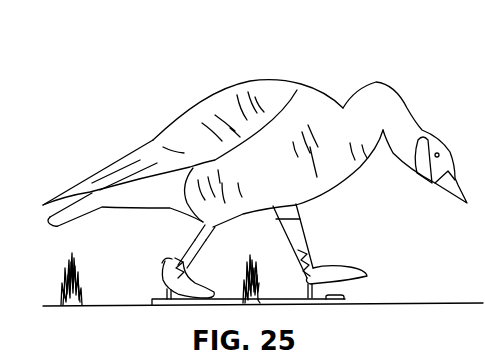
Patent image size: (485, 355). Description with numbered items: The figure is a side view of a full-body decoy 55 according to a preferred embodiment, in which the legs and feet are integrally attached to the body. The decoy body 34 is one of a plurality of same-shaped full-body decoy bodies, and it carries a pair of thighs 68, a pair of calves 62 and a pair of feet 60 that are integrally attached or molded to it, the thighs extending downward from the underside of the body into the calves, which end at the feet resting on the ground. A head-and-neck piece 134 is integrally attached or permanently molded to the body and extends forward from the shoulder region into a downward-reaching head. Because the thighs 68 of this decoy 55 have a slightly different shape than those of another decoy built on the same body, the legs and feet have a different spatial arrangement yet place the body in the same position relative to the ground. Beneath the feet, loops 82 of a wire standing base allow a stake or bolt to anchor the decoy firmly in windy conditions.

The full-body decoy body 34 is at (163, 125).
The decoy 55 is at (242, 68).
The head-and-neck piece 134 is at (413, 103).
The thighs 68 is at (204, 223).
The calves 62 is at (193, 243).
The feet 60 is at (162, 280).
The loops 82 is at (152, 300).